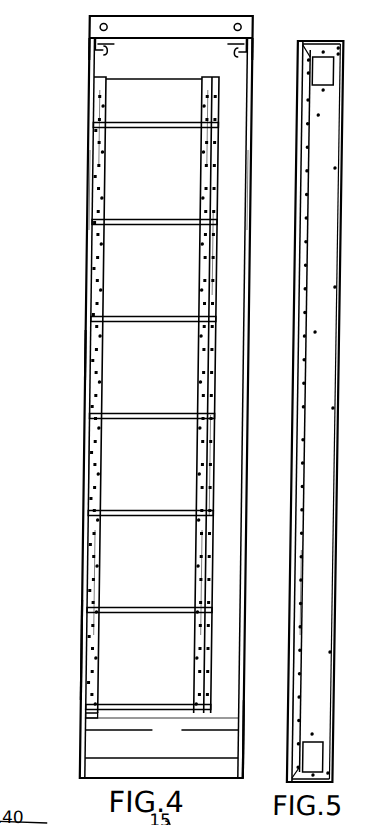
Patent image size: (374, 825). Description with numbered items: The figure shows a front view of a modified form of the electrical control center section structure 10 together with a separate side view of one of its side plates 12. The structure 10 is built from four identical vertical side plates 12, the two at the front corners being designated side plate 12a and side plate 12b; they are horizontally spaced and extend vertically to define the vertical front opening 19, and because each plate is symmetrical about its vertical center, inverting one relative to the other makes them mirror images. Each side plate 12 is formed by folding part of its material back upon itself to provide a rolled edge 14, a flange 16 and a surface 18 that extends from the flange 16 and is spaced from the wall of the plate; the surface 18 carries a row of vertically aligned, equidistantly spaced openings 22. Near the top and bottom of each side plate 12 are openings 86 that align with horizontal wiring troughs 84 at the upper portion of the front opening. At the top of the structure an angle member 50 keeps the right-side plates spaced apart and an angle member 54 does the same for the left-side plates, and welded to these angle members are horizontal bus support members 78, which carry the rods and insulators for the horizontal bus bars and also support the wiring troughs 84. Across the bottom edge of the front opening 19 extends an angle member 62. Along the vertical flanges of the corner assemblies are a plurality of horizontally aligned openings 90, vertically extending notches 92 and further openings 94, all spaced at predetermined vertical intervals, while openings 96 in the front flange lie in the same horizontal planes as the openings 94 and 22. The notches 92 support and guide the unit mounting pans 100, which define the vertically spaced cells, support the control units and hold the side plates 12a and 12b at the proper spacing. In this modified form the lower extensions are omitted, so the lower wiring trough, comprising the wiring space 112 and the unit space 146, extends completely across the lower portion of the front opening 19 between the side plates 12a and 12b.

In FIG. 4, the electrical control center section structure 10 is at (81, 359).
In FIG. 5, the side plate 12 is at (341, 396).
In FIG. 4, the side plate 12a is at (253, 722).
In FIG. 4, the side plate 12b is at (92, 650).
In FIG. 4, the rolled edge 14 is at (91, 192).
In FIG. 5, the rolled edge 14 is at (298, 367).
In FIG. 5, the flange 16 is at (303, 646).
In FIG. 5, the surface 18 is at (304, 707).
In FIG. 4, the vertical front opening 19 is at (161, 729).
In FIG. 5, the openings 22 is at (309, 628).
In FIG. 4, the angle member 50 is at (250, 43).
In FIG. 4, the angle member 54 is at (97, 40).
In FIG. 4, the angle member 62 is at (167, 765).
In FIG. 4, the horizontal bus support members 78 is at (95, 50).
In FIG. 4, the horizontal wiring troughs 84 is at (183, 64).
In FIG. 5, the openings 86 is at (332, 70).
In FIG. 4, the openings 90 is at (102, 630).
In FIG. 4, the notches 92 is at (95, 500).
In FIG. 4, the openings 94 is at (101, 161).
In FIG. 4, the openings 96 is at (216, 288).
In FIG. 4, the unit mounting pans 100 is at (169, 121).
In FIG. 4, the wiring space 112 is at (104, 771).
In FIG. 4, the unit space 146 is at (103, 730).